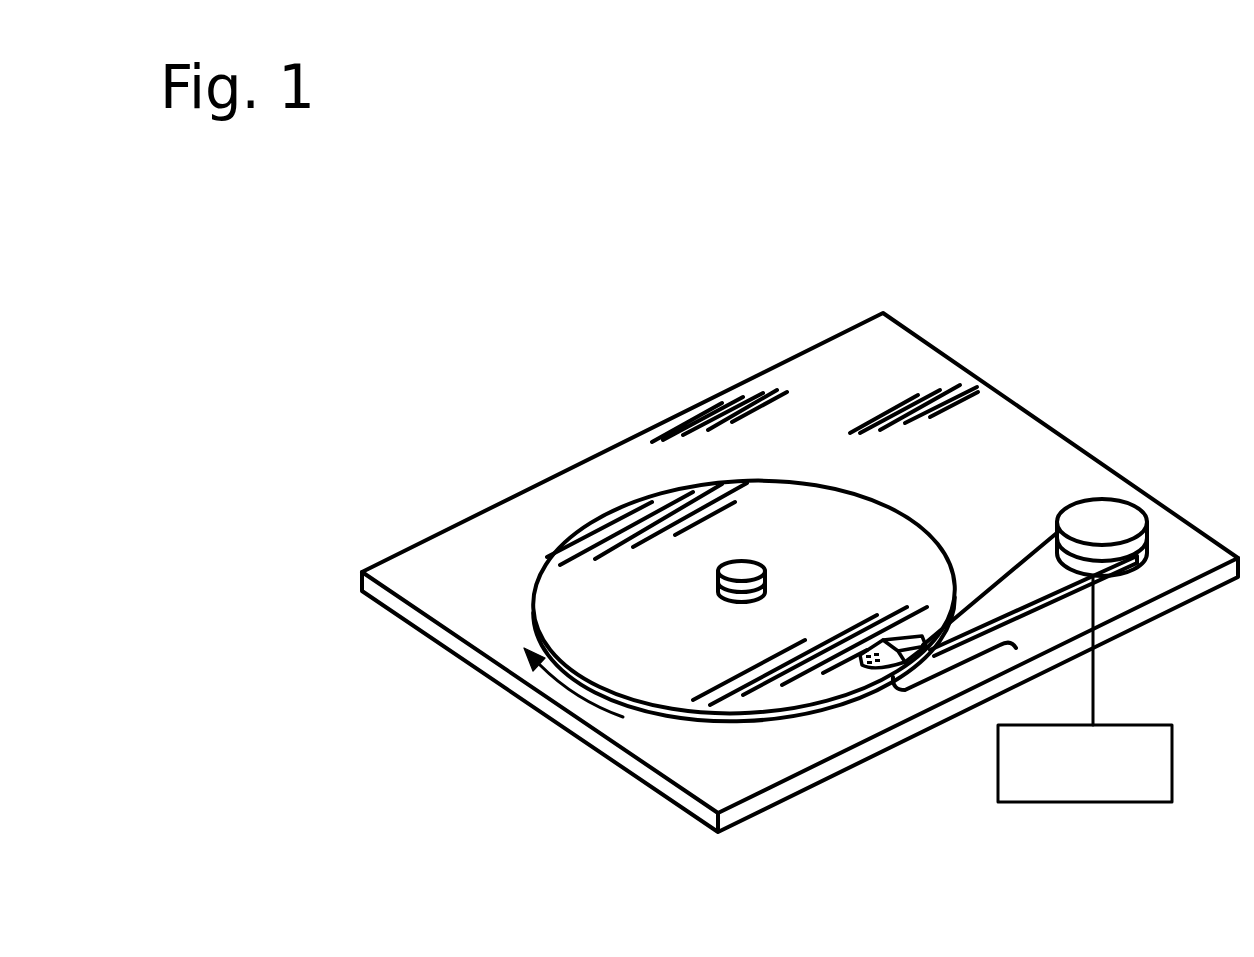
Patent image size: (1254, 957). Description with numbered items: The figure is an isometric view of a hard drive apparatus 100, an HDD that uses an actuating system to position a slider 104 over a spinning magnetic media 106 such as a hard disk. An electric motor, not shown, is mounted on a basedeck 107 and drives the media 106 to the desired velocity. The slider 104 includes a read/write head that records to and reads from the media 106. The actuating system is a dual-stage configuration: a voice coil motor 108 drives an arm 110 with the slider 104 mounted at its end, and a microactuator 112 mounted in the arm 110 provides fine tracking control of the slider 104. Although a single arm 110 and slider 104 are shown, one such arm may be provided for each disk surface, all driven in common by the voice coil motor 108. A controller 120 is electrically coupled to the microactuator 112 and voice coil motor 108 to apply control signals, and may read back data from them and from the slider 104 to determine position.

The hard drive apparatus 100 is at (483, 452).
The slider 104 is at (870, 648).
The magnetic media 106 is at (793, 493).
The basedeck 107 is at (650, 777).
The voice coil motor 108 is at (1108, 517).
The arm 110 is at (1016, 648).
The microactuator 112 is at (880, 655).
The controller 120 is at (1035, 805).